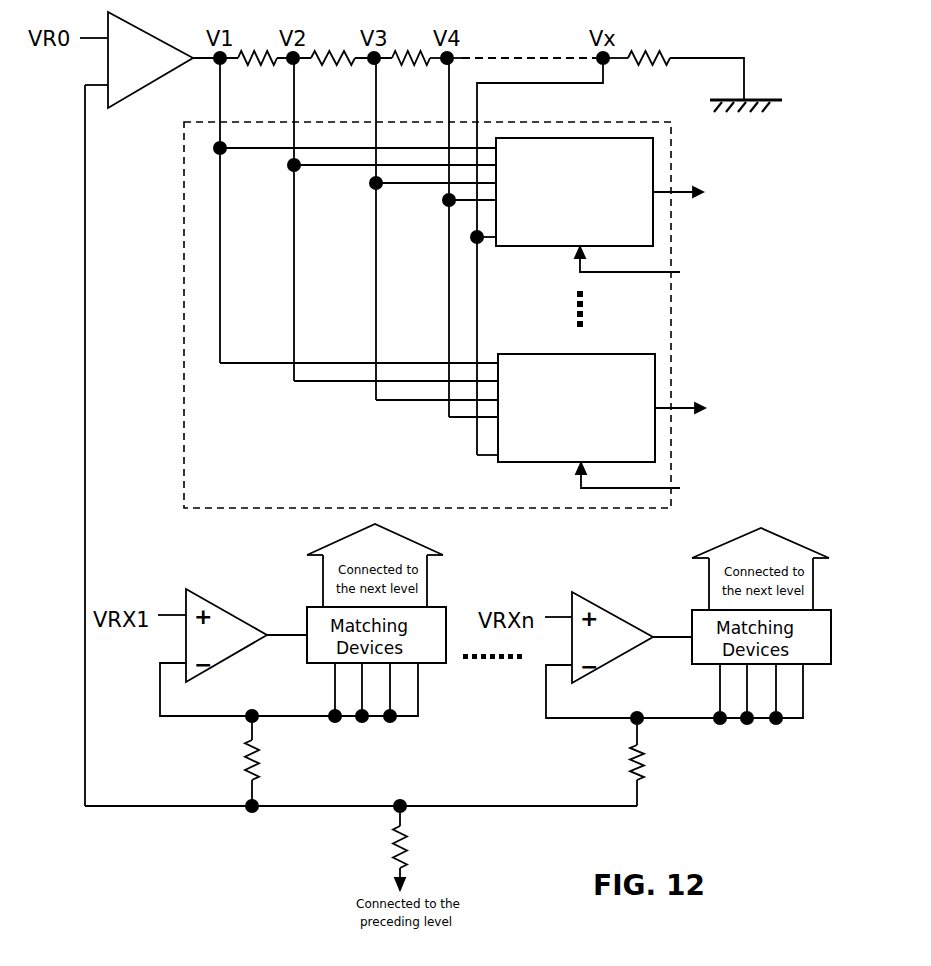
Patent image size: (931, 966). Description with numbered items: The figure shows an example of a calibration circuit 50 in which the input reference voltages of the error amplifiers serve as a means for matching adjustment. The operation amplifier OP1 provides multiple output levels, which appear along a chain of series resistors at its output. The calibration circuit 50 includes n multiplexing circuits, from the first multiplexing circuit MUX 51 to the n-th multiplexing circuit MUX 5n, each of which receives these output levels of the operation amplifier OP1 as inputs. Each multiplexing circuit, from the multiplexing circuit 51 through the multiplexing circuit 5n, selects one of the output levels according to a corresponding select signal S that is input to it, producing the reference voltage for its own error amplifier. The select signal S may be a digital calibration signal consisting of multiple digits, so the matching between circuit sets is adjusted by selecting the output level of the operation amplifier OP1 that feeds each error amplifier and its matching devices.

The calibration circuit 50 is at (186, 410).
The multiplexing circuit MUX 51 is at (458, 205).
The multiplexing circuit MUX 5n is at (462, 421).
The operation amplifier OP1 is at (136, 60).